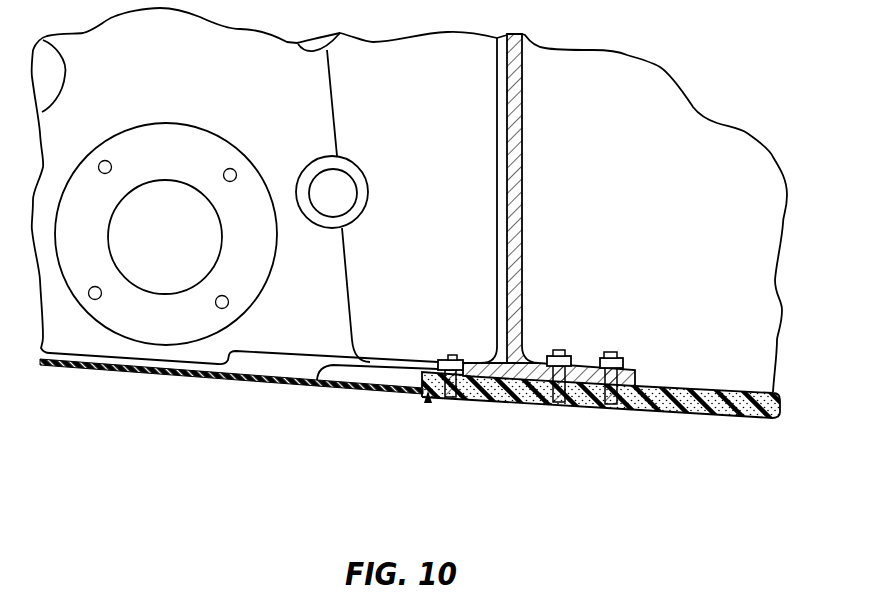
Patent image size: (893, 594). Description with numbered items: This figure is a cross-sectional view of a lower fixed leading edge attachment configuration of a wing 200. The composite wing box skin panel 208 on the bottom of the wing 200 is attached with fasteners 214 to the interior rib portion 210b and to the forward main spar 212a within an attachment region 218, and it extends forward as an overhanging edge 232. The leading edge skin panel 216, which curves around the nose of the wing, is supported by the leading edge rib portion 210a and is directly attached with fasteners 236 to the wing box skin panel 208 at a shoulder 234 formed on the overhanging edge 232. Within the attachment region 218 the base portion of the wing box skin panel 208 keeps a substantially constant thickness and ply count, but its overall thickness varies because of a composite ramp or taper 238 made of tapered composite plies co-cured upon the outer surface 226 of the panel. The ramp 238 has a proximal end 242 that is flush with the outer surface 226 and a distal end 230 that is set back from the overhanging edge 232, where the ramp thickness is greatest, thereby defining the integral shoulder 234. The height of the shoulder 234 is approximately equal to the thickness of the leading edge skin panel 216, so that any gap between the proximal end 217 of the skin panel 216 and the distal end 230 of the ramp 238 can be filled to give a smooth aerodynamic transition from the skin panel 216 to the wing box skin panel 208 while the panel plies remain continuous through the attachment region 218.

The wing 200 is at (300, 476).
The leading edge rib portion 210a is at (210, 88).
The interior rib portion 210b is at (688, 226).
The forward main spar 212a is at (514, 178).
The fasteners 214 is at (560, 350).
The wing box skin panel 208 is at (660, 385).
The leading edge skin panel 216 is at (329, 390).
The proximal end 217 is at (470, 402).
The attachment region 218 is at (768, 497).
The outer surface 226 is at (748, 430).
The distal end 230 is at (485, 404).
The overhanging edge 232 is at (412, 372).
The shoulder 234 is at (425, 408).
The fasteners 236 is at (454, 355).
The composite ramp 238 is at (528, 403).
The proximal end 242 is at (685, 418).